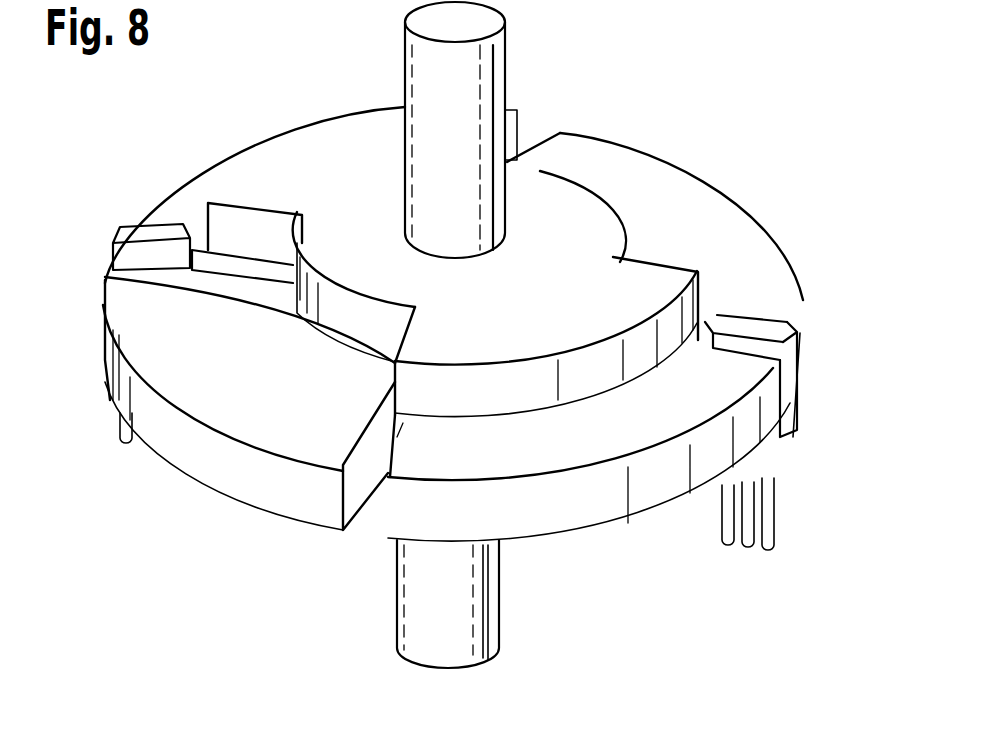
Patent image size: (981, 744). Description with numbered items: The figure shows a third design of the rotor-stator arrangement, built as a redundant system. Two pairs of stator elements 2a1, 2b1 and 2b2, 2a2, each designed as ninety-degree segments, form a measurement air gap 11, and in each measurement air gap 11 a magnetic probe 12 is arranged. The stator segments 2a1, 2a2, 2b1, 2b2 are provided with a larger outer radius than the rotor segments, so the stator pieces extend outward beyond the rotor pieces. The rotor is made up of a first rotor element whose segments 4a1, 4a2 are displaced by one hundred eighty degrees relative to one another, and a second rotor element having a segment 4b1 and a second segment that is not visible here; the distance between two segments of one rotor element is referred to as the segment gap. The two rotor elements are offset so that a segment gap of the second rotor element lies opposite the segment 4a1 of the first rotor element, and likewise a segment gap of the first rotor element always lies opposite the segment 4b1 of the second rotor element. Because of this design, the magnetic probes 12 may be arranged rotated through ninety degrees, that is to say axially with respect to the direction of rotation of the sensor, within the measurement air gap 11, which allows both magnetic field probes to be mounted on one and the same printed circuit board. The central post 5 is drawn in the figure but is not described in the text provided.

The central core post 5 is at (490, 62).
The stator element 2a1 is at (660, 175).
The stator element 2a2 is at (198, 192).
The stator element 2b1 is at (605, 510).
The stator element 2b2 is at (190, 452).
The segment of the first rotor element 4a1 is at (334, 130).
The segment of the first rotor element 4a2 is at (660, 295).
The segment of the second rotor element 4b1 is at (360, 545).
The measurement air gap 11 is at (240, 268).
The magnetic probe 12 is at (152, 237).